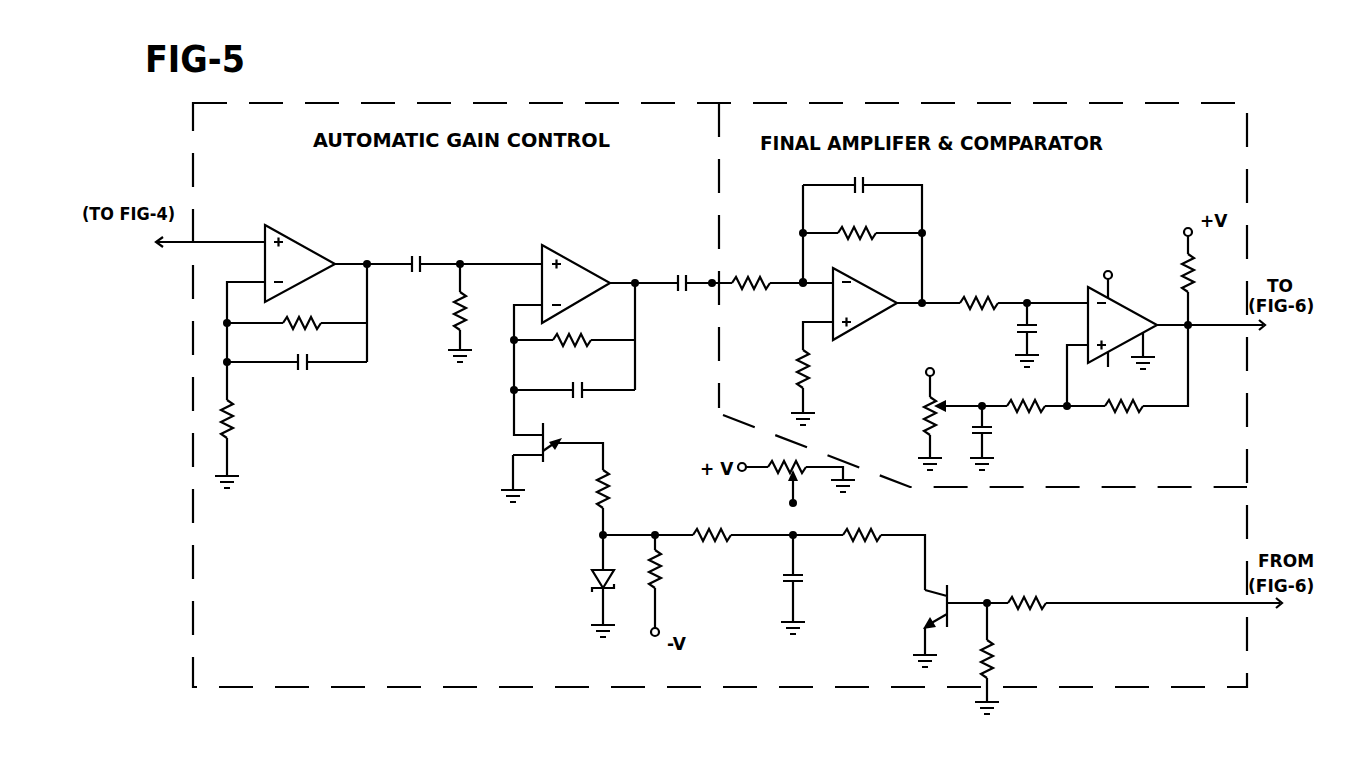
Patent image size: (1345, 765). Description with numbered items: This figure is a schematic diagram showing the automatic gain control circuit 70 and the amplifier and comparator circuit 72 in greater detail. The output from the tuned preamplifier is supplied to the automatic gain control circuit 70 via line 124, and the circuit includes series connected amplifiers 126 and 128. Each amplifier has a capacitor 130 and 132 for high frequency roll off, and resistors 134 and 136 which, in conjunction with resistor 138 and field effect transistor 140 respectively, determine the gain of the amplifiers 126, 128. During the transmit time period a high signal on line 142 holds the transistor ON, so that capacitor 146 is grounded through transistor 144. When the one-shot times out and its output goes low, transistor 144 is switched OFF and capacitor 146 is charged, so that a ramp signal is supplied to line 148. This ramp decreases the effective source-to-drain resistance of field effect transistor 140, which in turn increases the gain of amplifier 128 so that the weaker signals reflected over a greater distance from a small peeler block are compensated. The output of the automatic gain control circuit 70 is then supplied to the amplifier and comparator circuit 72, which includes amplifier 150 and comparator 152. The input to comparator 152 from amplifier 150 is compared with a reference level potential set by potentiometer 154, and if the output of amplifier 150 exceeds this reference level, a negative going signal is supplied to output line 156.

The automatic gain control circuit 70 is at (472, 103).
The amplifier and comparator circuit 72 is at (962, 103).
The line 124 is at (186, 243).
The amplifier 126 is at (306, 204).
The amplifier 128 is at (568, 226).
The capacitor 130 is at (307, 372).
The capacitor 132 is at (583, 398).
The resistor 134 is at (297, 311).
The resistor 136 is at (576, 337).
The resistor 138 is at (232, 420).
The field effect transistor 140 is at (549, 453).
The line 142 is at (1118, 603).
The transistor 144 is at (948, 590).
The capacitor 146 is at (803, 580).
The line 148 is at (622, 535).
The amplifier 150 is at (938, 247).
The comparator 152 is at (1131, 241).
The potentiometer 154 is at (934, 401).
The output line 156 is at (1215, 327).